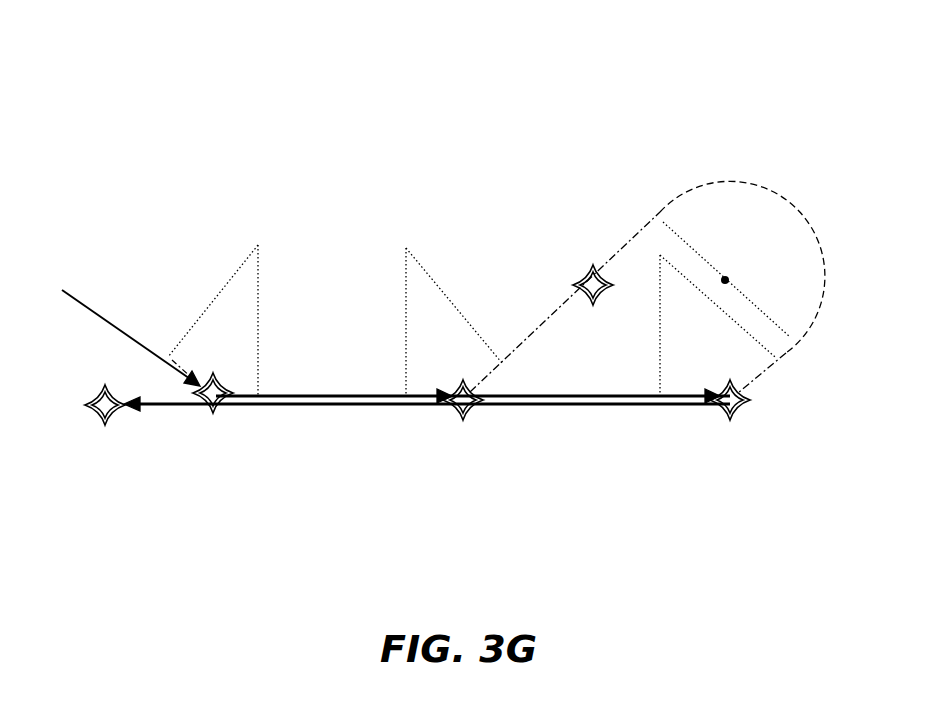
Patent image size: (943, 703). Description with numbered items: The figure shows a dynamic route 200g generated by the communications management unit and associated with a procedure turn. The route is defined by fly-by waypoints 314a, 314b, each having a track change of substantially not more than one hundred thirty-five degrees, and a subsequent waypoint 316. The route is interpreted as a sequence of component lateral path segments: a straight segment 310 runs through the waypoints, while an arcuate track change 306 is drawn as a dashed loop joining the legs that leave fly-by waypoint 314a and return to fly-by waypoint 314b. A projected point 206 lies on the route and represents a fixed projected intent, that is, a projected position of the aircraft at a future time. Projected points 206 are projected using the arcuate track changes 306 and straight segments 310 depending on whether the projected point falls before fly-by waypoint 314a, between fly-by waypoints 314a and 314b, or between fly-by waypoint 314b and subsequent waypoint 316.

The dynamic route 200g is at (108, 75).
The projected point 206 is at (585, 265).
The arcuate track change 306 is at (787, 202).
The straight segment 310 is at (345, 405).
The fly-by waypoint 314a is at (465, 385).
The fly-by waypoint 314b is at (747, 402).
The subsequent waypoint 316 is at (107, 418).